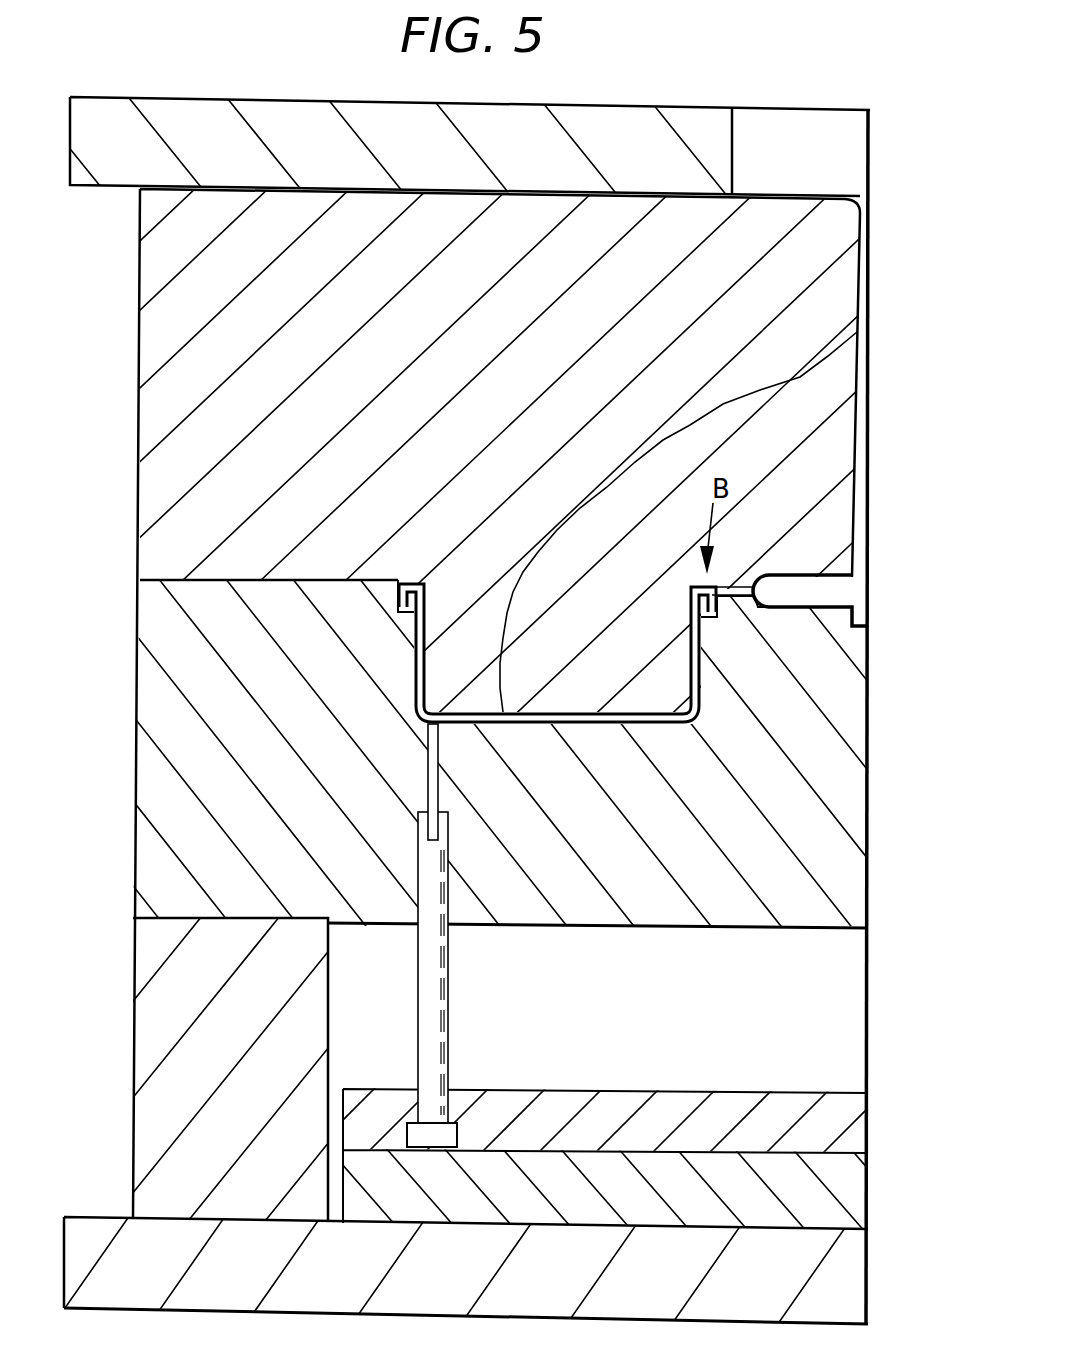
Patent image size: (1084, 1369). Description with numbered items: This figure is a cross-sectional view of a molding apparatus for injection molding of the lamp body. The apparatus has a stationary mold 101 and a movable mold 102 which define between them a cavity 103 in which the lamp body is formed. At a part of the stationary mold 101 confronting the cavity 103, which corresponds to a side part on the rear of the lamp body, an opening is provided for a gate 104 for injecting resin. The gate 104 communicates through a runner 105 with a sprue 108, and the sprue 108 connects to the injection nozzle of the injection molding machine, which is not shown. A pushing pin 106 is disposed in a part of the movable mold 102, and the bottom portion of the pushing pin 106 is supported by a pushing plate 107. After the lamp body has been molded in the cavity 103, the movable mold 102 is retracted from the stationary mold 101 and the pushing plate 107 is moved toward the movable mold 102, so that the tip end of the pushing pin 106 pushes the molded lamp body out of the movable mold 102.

The stationary mold 101 is at (152, 417).
The movable mold 102 is at (140, 740).
The cavity 103 is at (661, 427).
The gate 104 is at (737, 597).
The runner 105 is at (802, 577).
The pushing pin 106 is at (440, 876).
The pushing plate 107 is at (515, 1103).
The sprue 108 is at (863, 397).